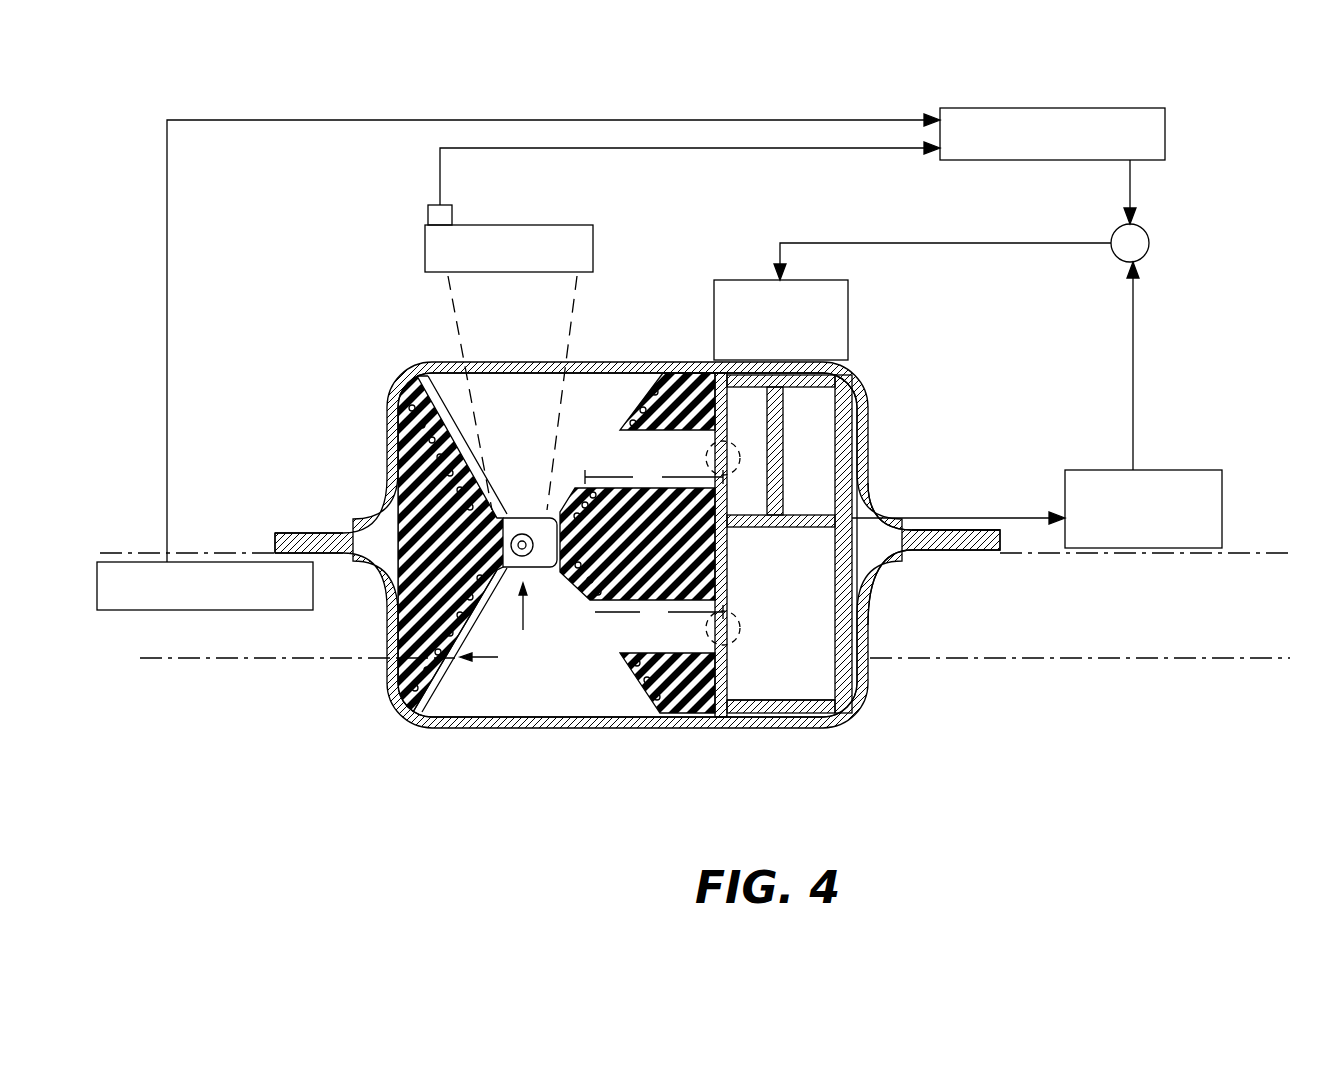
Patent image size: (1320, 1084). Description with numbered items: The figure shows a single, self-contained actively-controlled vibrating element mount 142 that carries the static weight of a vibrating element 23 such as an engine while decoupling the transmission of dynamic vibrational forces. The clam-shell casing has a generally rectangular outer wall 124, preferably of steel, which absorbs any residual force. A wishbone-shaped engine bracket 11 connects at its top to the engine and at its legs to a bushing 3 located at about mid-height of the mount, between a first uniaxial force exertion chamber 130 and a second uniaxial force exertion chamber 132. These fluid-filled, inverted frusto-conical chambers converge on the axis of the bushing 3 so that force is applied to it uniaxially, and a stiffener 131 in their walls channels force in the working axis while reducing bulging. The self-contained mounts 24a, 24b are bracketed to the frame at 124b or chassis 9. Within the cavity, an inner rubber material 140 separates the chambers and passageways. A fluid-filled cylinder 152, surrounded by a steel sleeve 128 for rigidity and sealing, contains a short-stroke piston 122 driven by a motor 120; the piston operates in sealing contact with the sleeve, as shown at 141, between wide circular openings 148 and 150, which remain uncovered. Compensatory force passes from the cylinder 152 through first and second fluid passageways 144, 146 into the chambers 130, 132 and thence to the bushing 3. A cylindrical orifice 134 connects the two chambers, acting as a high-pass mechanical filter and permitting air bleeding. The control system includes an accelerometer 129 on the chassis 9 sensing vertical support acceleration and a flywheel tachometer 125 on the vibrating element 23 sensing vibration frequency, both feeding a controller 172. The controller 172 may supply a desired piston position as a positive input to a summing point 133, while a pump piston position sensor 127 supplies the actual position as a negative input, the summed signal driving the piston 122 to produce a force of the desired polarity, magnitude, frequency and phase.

The bushing 3 is at (512, 548).
The chassis 9 is at (1113, 660).
The engine bracket 11 is at (452, 303).
The vibrating element 23 is at (538, 225).
The self-contained mount 24a is at (324, 540).
The self-contained mount 24b is at (971, 553).
The motor 120 is at (750, 283).
The short-stroke piston 122 is at (860, 487).
The outer wall 124 is at (398, 712).
The frame 124b is at (980, 537).
The flywheel tachometer 125 is at (437, 205).
The pump piston position sensor 127 is at (1160, 470).
The steel sleeve 128 is at (775, 705).
The accelerometer 129 is at (190, 558).
The first uniaxial force exertion chamber 130 is at (583, 383).
The stiffener 131 is at (410, 660).
The second uniaxial force exertion chamber 132 is at (531, 665).
The summing point 133 is at (1150, 238).
The orifice 134 is at (547, 520).
The inner rubber material 140 is at (718, 560).
The sealing contact 141 is at (727, 550).
The self-contained actively-controlled vibrating element mount 142 is at (873, 600).
The first fluid passageway 144 is at (660, 373).
The second fluid passageway 146 is at (688, 657).
The circular opening 148 is at (740, 462).
The circular opening 150 is at (797, 685).
The fluid-filled cylinder 152 is at (738, 628).
The controller 172 is at (1165, 137).